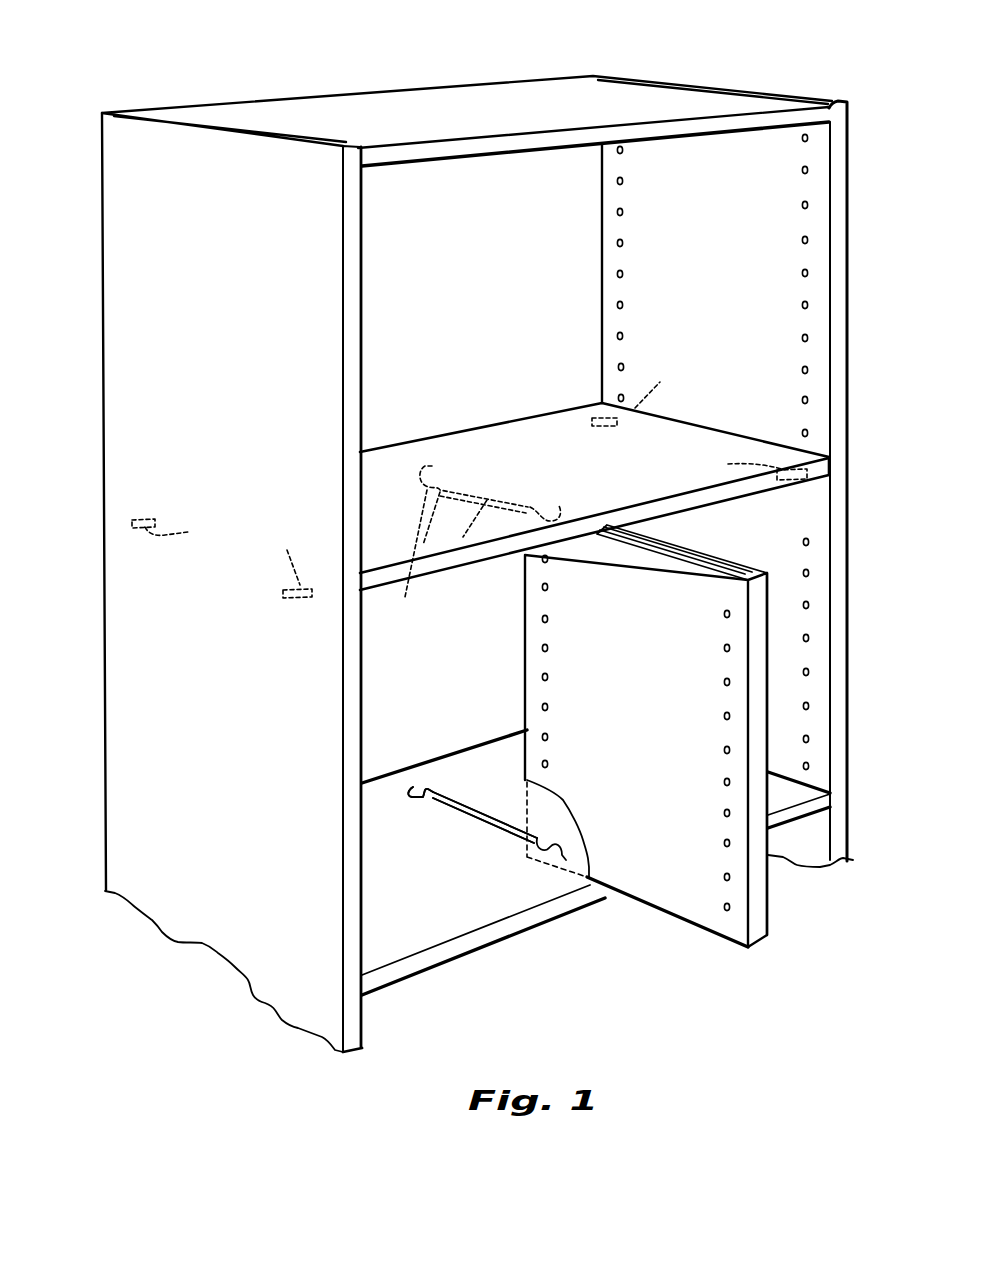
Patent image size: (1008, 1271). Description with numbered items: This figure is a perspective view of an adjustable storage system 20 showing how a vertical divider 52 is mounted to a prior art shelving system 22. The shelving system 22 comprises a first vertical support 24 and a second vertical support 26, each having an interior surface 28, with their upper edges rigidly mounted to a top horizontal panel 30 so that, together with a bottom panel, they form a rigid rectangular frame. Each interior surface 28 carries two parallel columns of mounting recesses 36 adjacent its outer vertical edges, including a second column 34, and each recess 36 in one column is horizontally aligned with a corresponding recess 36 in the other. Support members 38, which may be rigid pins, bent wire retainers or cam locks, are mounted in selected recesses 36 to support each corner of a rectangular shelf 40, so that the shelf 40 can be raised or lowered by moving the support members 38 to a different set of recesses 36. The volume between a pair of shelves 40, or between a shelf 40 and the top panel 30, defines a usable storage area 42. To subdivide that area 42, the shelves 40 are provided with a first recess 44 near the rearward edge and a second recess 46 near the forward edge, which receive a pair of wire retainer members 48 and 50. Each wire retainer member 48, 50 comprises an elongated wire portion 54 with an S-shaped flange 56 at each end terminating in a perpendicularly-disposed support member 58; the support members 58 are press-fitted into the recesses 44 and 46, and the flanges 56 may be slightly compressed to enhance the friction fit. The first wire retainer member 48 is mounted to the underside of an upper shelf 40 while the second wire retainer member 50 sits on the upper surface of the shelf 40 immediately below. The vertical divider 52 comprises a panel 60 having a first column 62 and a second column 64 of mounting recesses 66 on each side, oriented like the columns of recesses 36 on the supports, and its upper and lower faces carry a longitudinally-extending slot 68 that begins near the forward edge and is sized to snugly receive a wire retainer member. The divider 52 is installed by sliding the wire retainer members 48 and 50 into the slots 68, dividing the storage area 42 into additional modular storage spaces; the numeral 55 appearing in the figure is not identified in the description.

The adjustable storage system 20 is at (202, 64).
The shelving system 22 is at (97, 313).
The first vertical support 24 is at (102, 537).
The second vertical support 26 is at (850, 416).
The interior surface 28 is at (760, 312).
The top horizontal panel 30 is at (256, 98).
The second column 34 is at (814, 339).
The mounting recesses 36 is at (623, 273).
The support members 38 is at (469, 476).
The shelf 40 is at (490, 447).
The usable storage area 42 is at (482, 186).
The first recess 44 is at (432, 466).
The second recess 46 is at (557, 503).
The wire retainer member 48 is at (508, 512).
The wire retainer member 50 is at (477, 803).
The vertical divider 52 is at (648, 690).
The elongated wire portion 54 is at (458, 832).
The bracket leg 55 is at (408, 543).
The S-shaped flanges 56 is at (605, 818).
The support members 58 is at (423, 803).
The panel 60 is at (730, 668).
The first column 62 is at (556, 583).
The second column 64 is at (720, 646).
The mounting recesses 66 is at (550, 649).
The longitudinally-extending slot 68 is at (706, 565).